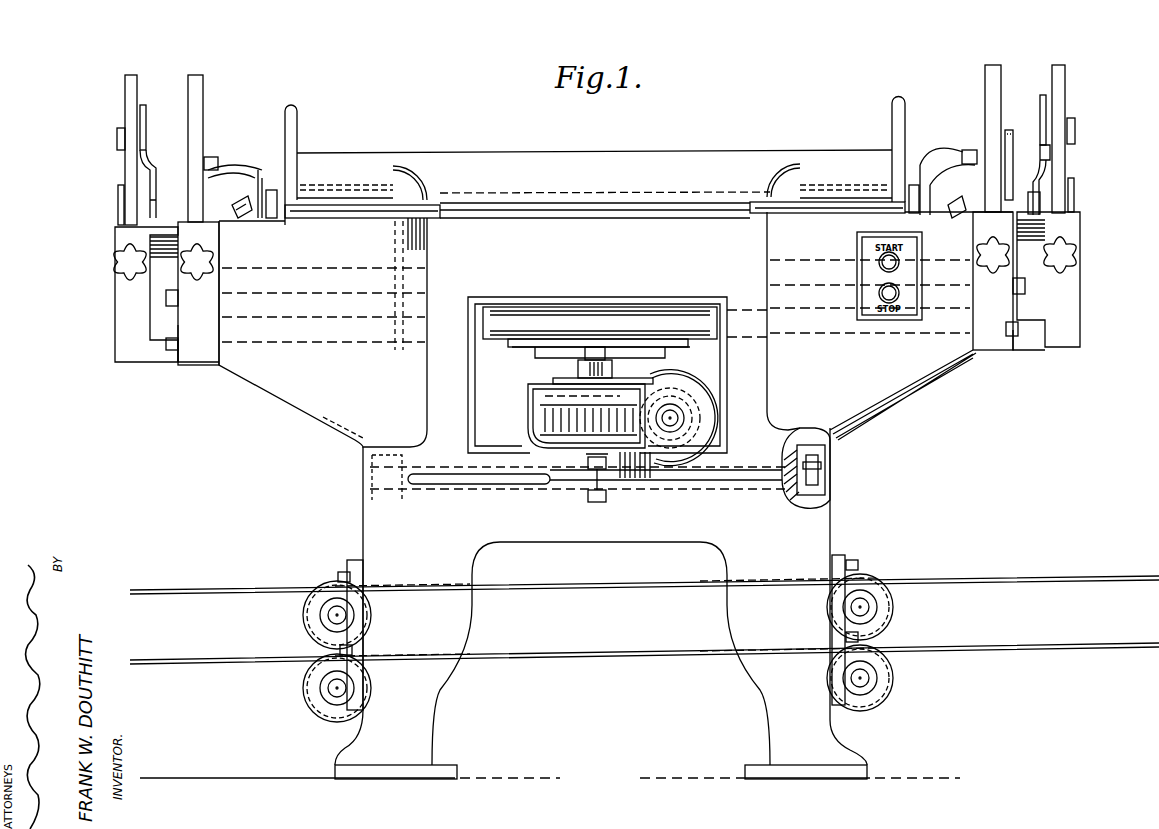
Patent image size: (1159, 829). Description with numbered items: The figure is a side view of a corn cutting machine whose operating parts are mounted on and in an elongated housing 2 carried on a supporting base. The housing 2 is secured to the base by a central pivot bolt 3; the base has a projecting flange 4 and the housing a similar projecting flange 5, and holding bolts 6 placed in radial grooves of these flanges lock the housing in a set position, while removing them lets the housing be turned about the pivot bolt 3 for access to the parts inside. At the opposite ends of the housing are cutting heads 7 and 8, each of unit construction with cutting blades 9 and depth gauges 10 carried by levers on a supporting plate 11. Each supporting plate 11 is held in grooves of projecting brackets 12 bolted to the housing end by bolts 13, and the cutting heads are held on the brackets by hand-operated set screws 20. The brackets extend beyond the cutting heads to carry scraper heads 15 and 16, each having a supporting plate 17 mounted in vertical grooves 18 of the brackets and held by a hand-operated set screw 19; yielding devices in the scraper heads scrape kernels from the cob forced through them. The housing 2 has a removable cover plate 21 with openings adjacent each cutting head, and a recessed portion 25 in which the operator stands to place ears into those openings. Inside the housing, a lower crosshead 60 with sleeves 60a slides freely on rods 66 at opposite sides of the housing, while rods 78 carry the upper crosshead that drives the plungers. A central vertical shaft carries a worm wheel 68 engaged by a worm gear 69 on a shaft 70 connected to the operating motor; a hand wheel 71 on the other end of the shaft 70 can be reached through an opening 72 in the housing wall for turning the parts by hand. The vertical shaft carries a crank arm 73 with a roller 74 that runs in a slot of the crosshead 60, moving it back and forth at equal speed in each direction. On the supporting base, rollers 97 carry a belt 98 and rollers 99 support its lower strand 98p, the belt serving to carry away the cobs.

The housing 2 is at (605, 215).
The central pivot bolt 3 is at (594, 502).
The projecting flange 4 is at (822, 482).
The projecting flange 5 is at (830, 455).
The holding bolts 6 is at (821, 470).
The cutting head 7 is at (213, 158).
The cutting head 8 is at (966, 150).
The cutting blades 9 is at (238, 200).
The depth gauges 10 is at (276, 198).
The supporting plate 11 is at (198, 80).
The projecting brackets 12 is at (208, 350).
The bolts 13 is at (180, 350).
The scraper head 15 is at (140, 198).
The scraper head 16 is at (1034, 192).
The supporting plate 17 is at (128, 82).
The vertical grooves 18 is at (1042, 138).
The hand-operated set screw 19 is at (128, 272).
The hand-operated set screws 20 is at (201, 272).
The removable cover plate 21 is at (706, 160).
The recessed portion 25 is at (748, 247).
The lower crosshead 60 is at (593, 312).
The sleeves 60a is at (700, 308).
The rods 66 is at (280, 346).
The worm wheel 68 is at (527, 423).
The worm gear 69 is at (705, 420).
The shaft 70 is at (670, 424).
The hand wheel 71 is at (712, 428).
The opening 72 is at (724, 358).
The crank arm 73 is at (612, 366).
The roller 74 is at (572, 356).
The rods 78 is at (285, 262).
The rollers 97 is at (322, 582).
The belt 98 is at (594, 590).
The lower strand of belt 98p is at (598, 663).
The rollers 99 is at (326, 710).